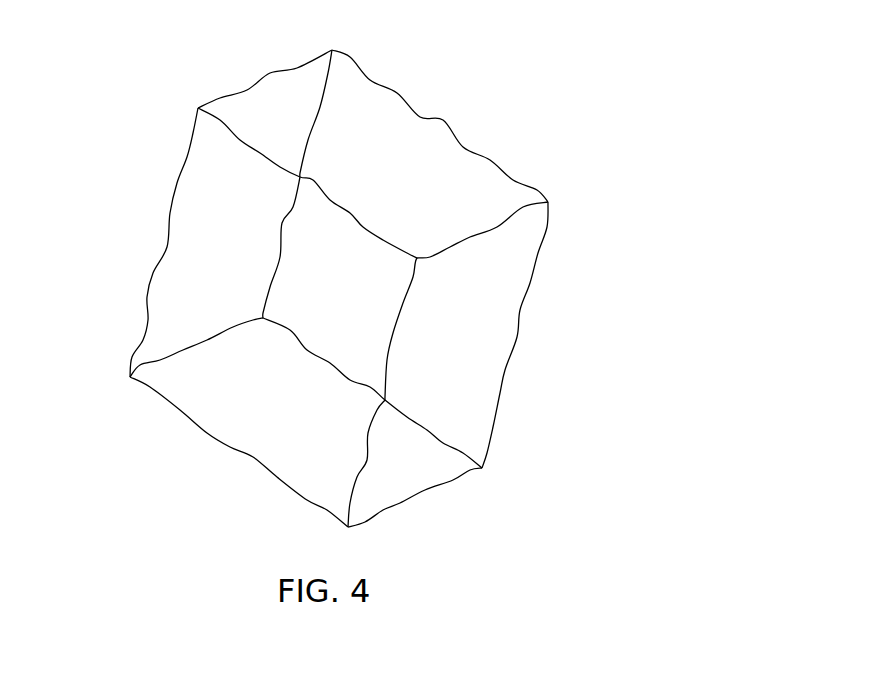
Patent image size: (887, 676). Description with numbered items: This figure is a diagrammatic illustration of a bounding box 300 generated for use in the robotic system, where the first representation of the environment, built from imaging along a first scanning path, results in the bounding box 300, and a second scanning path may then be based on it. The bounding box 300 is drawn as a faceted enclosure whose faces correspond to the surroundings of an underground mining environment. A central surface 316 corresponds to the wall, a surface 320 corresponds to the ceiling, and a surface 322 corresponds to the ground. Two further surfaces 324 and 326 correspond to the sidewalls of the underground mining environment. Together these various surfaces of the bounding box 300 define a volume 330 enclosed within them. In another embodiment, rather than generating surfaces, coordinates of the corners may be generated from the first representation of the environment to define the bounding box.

The bounding box 300 is at (381, 272).
The surface 316 is at (366, 297).
The surface 320 is at (440, 132).
The surface 322 is at (232, 422).
The surface 324 is at (183, 240).
The surface 326 is at (493, 362).
The volume 330 is at (157, 329).